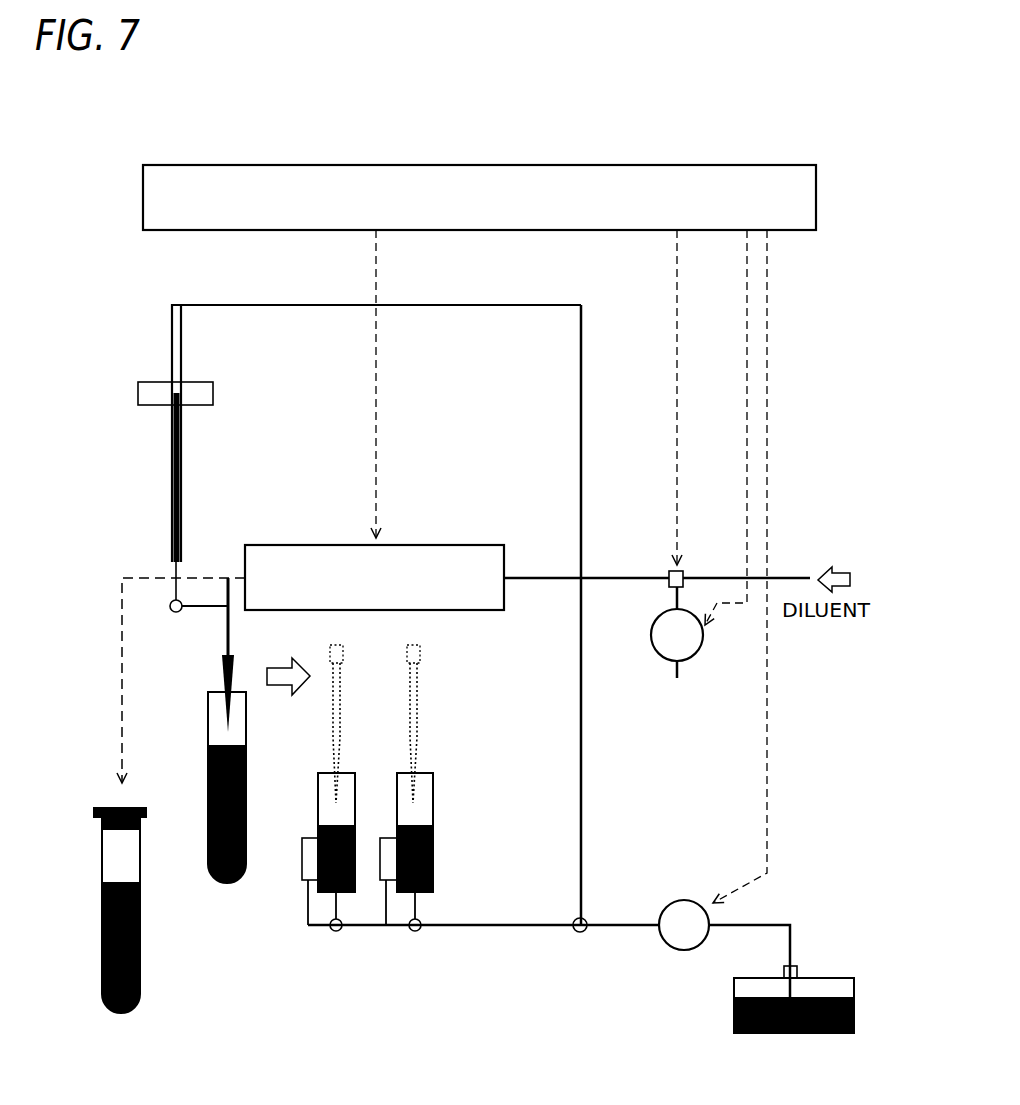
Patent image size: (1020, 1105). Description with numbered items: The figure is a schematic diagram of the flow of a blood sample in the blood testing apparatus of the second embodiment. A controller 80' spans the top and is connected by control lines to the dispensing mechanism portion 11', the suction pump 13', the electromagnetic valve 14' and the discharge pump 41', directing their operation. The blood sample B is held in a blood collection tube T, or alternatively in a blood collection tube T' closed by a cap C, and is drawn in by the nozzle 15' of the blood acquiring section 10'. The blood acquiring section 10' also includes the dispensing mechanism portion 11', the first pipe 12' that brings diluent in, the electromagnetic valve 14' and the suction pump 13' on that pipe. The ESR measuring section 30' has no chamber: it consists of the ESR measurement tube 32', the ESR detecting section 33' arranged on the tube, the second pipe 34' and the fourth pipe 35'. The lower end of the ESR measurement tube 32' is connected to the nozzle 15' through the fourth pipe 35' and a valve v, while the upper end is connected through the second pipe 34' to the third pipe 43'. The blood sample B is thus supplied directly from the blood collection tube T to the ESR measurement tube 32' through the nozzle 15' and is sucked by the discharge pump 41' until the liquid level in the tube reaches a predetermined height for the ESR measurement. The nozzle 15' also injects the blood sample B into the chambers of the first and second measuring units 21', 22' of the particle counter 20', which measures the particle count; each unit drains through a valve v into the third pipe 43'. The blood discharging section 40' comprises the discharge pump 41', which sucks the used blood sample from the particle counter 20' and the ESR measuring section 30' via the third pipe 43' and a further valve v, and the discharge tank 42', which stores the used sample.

The controller 80' is at (445, 197).
The ESR measuring section 30' is at (326, 427).
The ESR detecting section 33' is at (142, 380).
The ESR measurement tube 32' is at (141, 477).
The blood acquiring section 10' is at (158, 660).
The fourth pipe 35' is at (199, 575).
The nozzle 15' is at (262, 655).
The dispensing mechanism portion 11' is at (408, 567).
The first pipe 12' is at (657, 548).
The electromagnetic valve 14' is at (697, 552).
The suction pump 13' is at (645, 632).
The second pipe 34' is at (615, 615).
The particle counter 20' is at (401, 801).
The first measuring unit 21' is at (312, 785).
The second measuring unit 22' is at (392, 785).
The third pipe 43' is at (483, 958).
The blood discharging section 40' is at (743, 938).
The discharge pump 41' is at (669, 896).
The discharge tank 42' is at (759, 998).
The blood collection tube T is at (213, 775).
The blood collection tube T' is at (142, 910).
The blood sample B is at (208, 745).
The cap C is at (146, 820).
The valve v is at (173, 612).